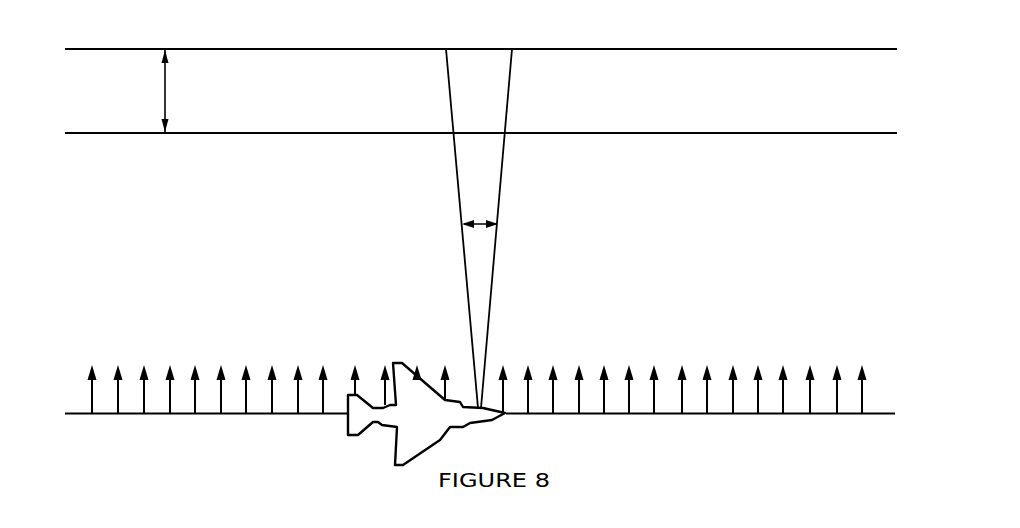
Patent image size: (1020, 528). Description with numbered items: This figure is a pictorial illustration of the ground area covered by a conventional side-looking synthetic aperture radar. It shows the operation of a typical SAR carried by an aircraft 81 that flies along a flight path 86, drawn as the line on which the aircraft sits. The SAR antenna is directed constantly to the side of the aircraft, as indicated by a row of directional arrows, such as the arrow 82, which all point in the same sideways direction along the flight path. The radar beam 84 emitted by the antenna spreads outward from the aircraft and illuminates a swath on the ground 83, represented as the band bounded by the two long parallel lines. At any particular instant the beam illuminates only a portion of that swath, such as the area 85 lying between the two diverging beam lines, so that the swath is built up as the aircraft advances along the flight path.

The aircraft 81 is at (403, 370).
The directional arrow 82 is at (93, 387).
The swath on the ground 83 is at (164, 86).
The radar beam 84 is at (478, 226).
The area 85 is at (496, 60).
The flight path 86 is at (880, 413).